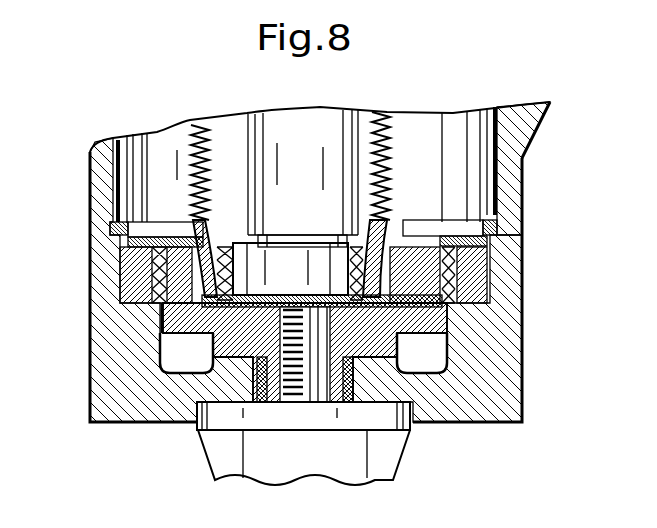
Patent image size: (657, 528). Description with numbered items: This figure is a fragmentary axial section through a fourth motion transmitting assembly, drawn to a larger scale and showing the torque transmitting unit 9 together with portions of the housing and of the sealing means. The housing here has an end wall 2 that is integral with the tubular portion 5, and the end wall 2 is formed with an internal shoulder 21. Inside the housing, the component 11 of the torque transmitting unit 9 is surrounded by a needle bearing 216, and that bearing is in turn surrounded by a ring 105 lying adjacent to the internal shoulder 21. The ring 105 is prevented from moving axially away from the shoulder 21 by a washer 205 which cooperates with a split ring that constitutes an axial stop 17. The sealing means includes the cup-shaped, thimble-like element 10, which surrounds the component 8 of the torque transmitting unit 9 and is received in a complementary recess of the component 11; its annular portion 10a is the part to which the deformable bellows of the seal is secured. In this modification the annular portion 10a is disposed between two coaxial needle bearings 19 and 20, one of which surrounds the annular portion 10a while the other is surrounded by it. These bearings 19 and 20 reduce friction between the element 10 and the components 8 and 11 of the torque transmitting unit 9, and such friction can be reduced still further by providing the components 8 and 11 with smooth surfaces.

The end wall 2 is at (470, 412).
The tubular portion 5 is at (505, 147).
The component of the torque transmitting unit 8 is at (296, 285).
The torque transmitting unit 9 is at (193, 338).
The cup-shaped element 10 is at (395, 222).
The annular portion 10a is at (200, 225).
The component of the torque transmitting unit 11 is at (420, 317).
The axial stop 17 is at (118, 229).
The needle bearing 19 is at (140, 277).
The needle bearing 20 is at (163, 317).
The internal shoulder 21 is at (467, 337).
The ring 105 is at (485, 289).
The washer 205 is at (460, 222).
The needle bearing 216 is at (449, 270).